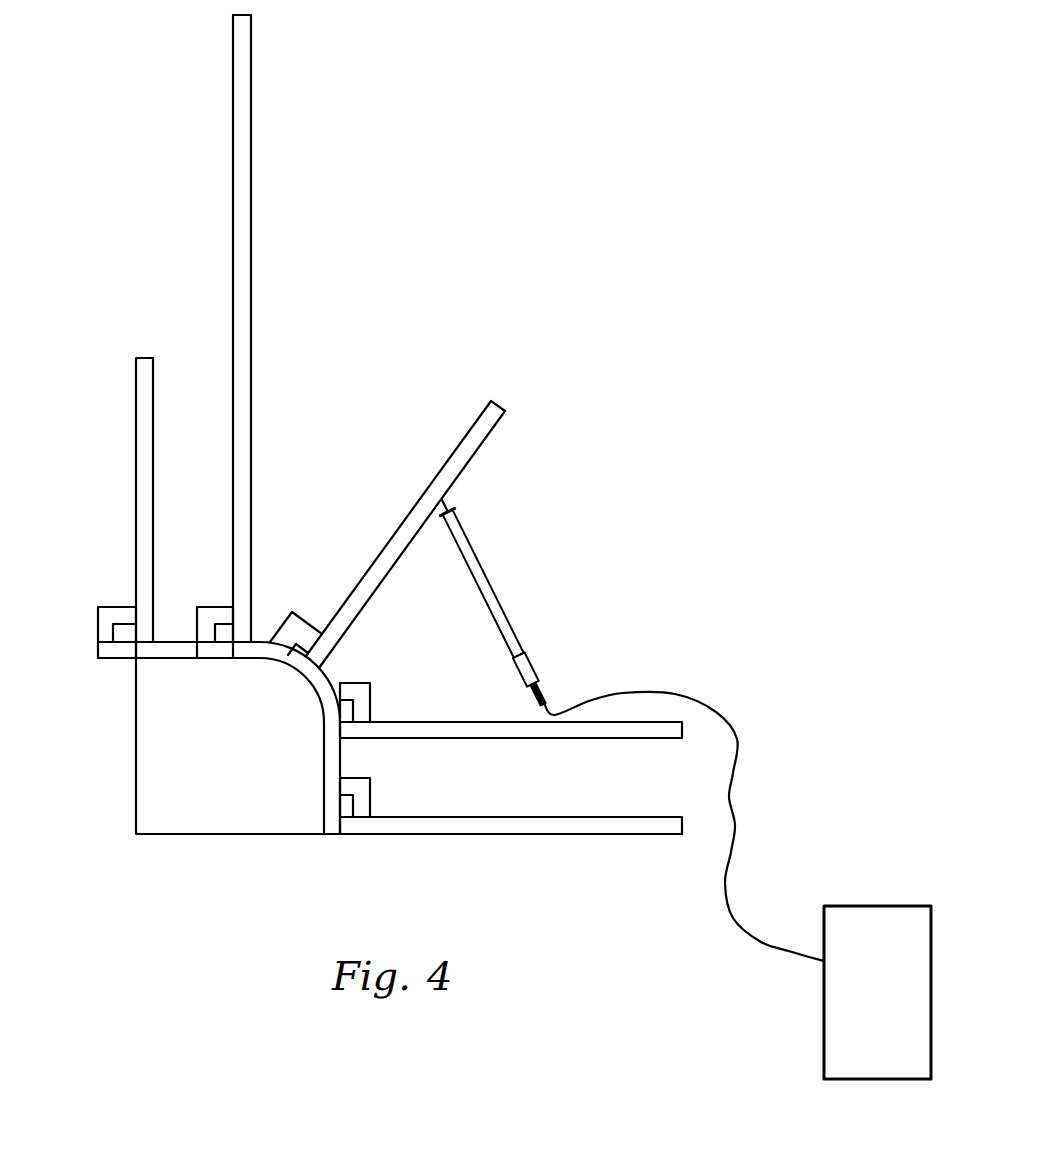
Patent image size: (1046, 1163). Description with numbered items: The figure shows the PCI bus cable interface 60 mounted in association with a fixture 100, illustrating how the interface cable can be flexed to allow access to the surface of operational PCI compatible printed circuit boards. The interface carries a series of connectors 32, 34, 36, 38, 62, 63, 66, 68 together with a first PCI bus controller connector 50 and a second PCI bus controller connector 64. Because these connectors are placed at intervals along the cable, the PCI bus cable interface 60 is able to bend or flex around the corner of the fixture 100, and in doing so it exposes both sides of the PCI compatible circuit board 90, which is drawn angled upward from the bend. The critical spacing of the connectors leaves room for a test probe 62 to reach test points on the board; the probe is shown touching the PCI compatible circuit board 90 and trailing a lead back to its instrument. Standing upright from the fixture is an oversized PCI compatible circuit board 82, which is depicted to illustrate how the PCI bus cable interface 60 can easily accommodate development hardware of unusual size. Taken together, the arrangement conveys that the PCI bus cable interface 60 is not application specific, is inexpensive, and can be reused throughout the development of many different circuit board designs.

The connector 32 is at (110, 633).
The connector 34 is at (208, 642).
The connector 36 is at (345, 683).
The connector 38 is at (345, 790).
The PCI bus controller connector 1 50 is at (290, 647).
The PCI bus cable interface 60 is at (82, 551).
The connector / test probe 62 is at (112, 607).
The connector 63 is at (208, 607).
The PCI bus controller connector 2 64 is at (292, 612).
The connector 66 is at (370, 692).
The connector 68 is at (370, 787).
The oversized PCI compatible circuit board 82 is at (251, 115).
The PCI compatible circuit board 90 is at (463, 440).
The fixture 100 is at (175, 835).